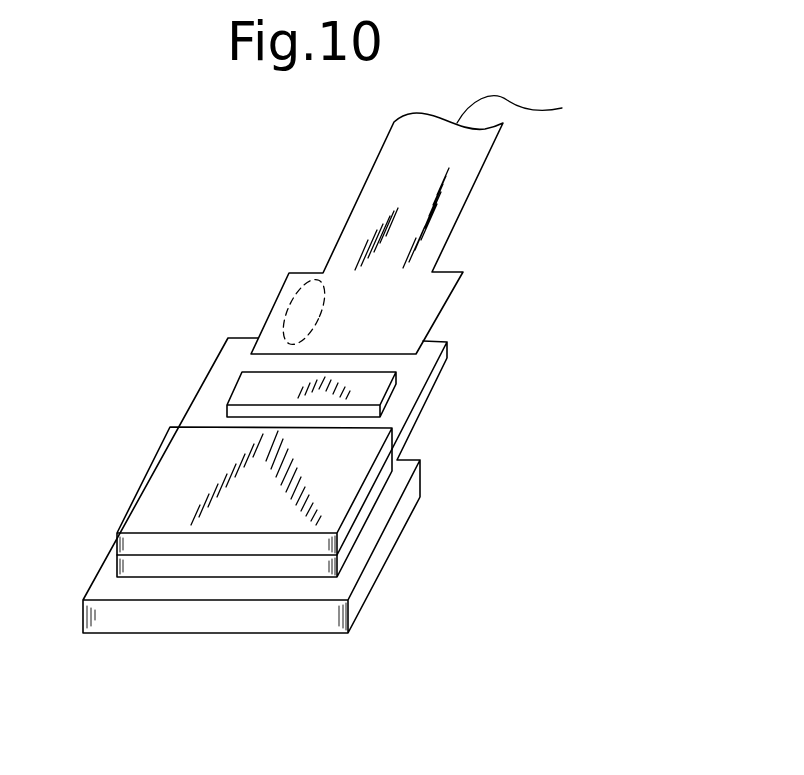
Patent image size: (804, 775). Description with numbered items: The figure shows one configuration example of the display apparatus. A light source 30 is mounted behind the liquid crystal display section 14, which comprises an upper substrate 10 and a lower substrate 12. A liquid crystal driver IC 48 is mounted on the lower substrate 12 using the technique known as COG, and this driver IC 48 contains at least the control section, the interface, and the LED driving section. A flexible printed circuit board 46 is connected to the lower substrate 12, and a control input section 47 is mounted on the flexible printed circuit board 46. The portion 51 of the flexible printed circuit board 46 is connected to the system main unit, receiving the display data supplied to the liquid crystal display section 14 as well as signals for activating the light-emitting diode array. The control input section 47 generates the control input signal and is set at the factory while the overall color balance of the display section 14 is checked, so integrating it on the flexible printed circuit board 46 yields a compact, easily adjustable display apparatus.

The upper substrate 10 is at (173, 545).
The lower substrate 12 is at (143, 568).
The liquid crystal display section 14 is at (254, 593).
The light source 30 is at (318, 618).
The flexible printed circuit board 46 is at (355, 218).
The control input section 47 is at (288, 300).
The liquid crystal driver IC 48 is at (257, 390).
The portion of the FPC 51 is at (526, 107).